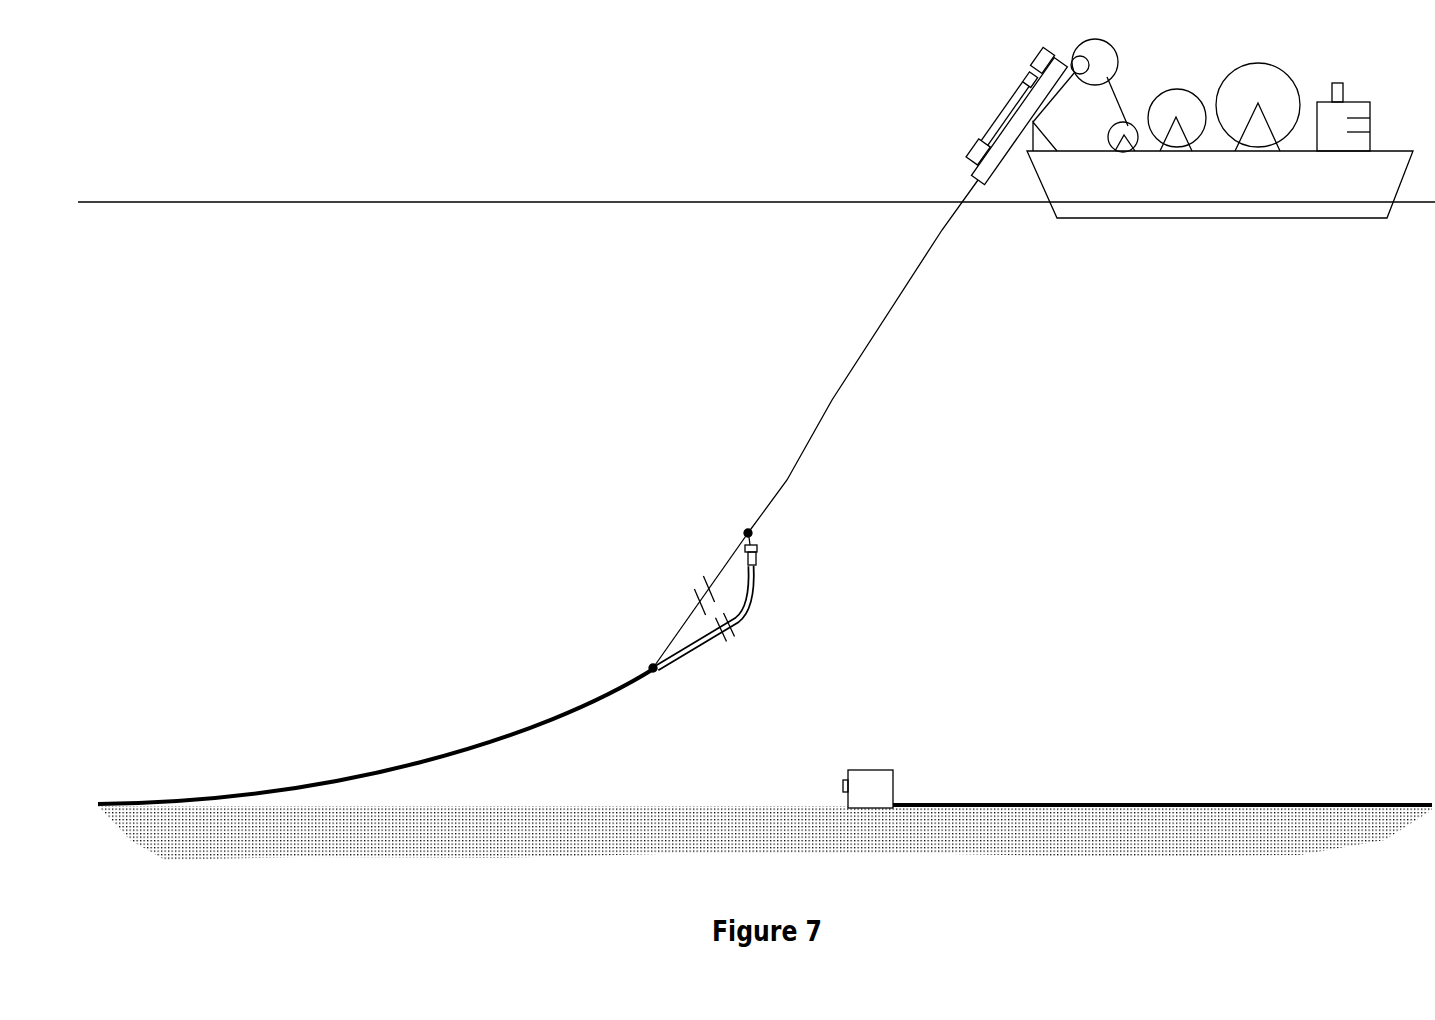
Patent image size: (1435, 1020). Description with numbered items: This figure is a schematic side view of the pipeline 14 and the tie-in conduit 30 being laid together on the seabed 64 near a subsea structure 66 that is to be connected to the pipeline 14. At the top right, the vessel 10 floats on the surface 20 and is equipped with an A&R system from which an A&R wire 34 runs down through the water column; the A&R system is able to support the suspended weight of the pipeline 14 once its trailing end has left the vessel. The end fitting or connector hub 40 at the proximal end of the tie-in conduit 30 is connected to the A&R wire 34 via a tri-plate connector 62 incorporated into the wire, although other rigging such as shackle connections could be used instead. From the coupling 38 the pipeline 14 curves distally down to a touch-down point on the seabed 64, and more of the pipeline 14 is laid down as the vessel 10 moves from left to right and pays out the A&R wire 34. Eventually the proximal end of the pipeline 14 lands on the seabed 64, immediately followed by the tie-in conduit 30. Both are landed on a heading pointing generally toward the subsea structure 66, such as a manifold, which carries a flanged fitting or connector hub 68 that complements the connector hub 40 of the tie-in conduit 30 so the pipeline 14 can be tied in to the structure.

The vessel 10 is at (1368, 72).
The surface 20 is at (342, 202).
The A&R wire 34 is at (800, 452).
The tri-plate connector 62 is at (746, 531).
The connector hub 40 is at (760, 555).
The tie-in conduit 30 is at (748, 600).
The coupling 38 is at (650, 665).
The pipeline 14 is at (510, 738).
The seabed 64 is at (695, 806).
The subsea structure 66 is at (873, 780).
The connector hub 68 is at (843, 782).